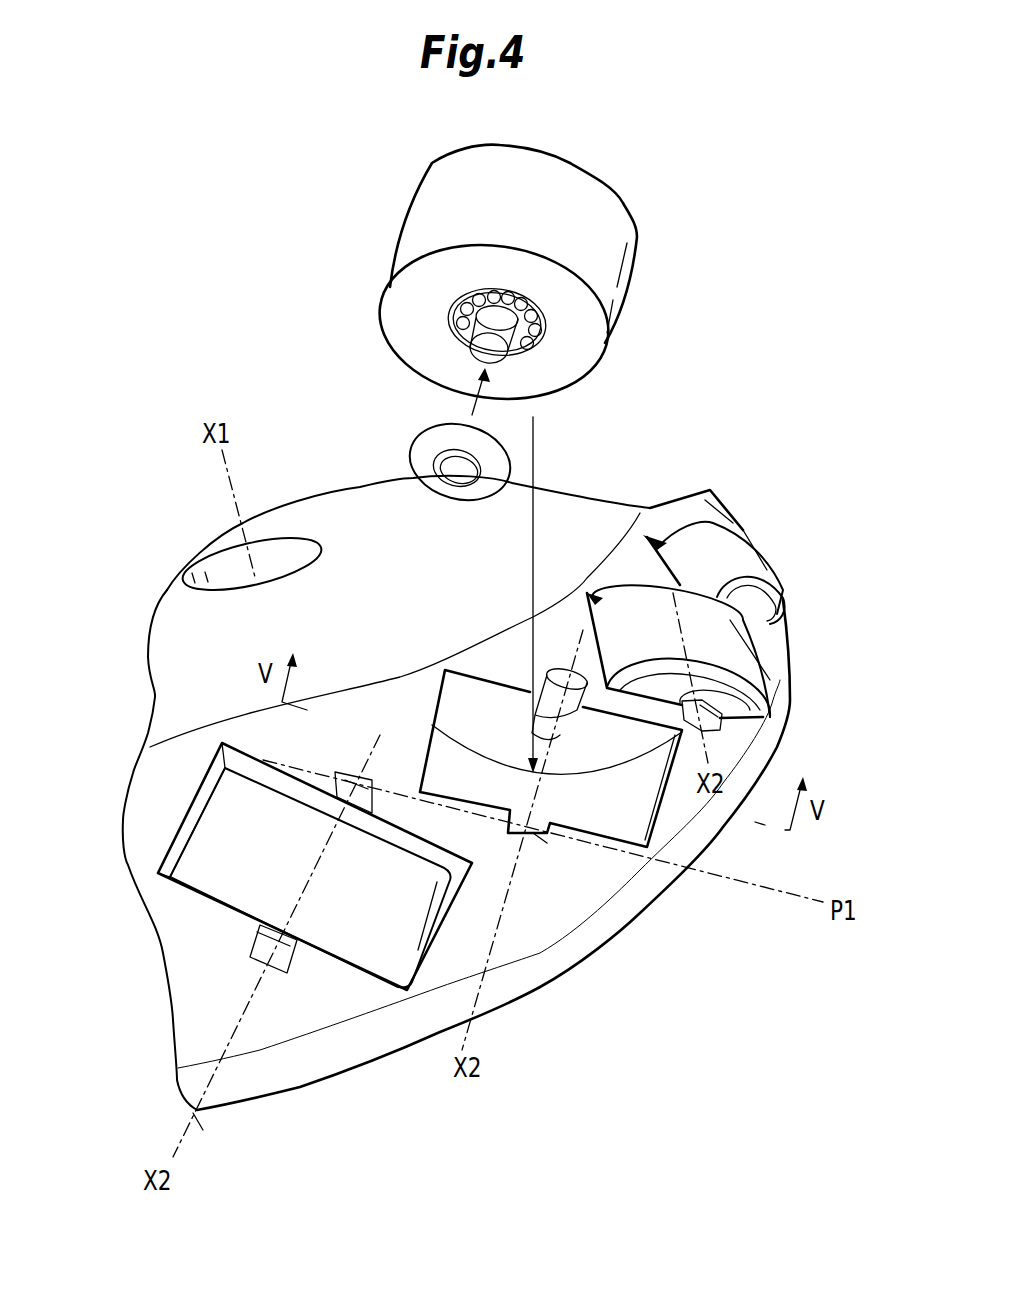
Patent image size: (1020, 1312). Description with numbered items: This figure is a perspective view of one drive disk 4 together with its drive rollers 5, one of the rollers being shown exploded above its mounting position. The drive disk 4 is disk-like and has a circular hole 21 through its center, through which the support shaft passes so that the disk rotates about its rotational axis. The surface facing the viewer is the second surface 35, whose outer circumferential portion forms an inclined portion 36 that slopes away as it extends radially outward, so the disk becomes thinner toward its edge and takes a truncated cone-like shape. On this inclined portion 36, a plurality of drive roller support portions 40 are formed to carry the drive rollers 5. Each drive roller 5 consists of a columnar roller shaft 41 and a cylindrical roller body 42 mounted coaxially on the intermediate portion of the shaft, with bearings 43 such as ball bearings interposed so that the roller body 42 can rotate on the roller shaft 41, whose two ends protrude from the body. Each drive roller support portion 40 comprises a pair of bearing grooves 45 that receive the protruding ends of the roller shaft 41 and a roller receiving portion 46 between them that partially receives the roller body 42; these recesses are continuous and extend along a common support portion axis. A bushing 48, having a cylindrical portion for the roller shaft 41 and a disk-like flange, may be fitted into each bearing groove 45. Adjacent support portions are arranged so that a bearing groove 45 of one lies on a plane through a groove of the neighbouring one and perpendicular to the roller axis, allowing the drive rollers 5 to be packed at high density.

The drive disk 4 is at (347, 528).
The drive roller 5 is at (516, 599).
The circular hole 21 is at (275, 573).
The second surface 35 is at (172, 600).
The inclined portion 36 is at (263, 1032).
The drive roller support portion 40 is at (190, 768).
The roller shaft 41 is at (483, 357).
The roller body 42 is at (605, 193).
The bearing 43 is at (528, 347).
The bearing groove 45 is at (260, 950).
The roller receiving portion 46 is at (172, 850).
The bushing 48 is at (427, 450).